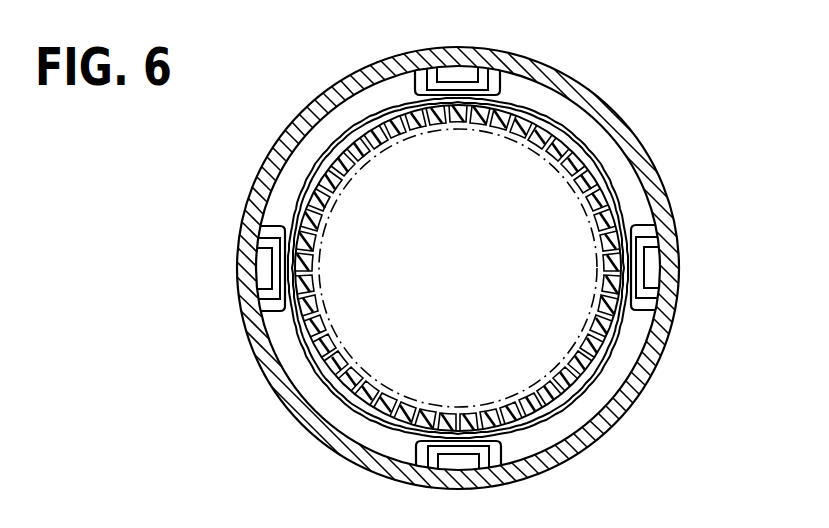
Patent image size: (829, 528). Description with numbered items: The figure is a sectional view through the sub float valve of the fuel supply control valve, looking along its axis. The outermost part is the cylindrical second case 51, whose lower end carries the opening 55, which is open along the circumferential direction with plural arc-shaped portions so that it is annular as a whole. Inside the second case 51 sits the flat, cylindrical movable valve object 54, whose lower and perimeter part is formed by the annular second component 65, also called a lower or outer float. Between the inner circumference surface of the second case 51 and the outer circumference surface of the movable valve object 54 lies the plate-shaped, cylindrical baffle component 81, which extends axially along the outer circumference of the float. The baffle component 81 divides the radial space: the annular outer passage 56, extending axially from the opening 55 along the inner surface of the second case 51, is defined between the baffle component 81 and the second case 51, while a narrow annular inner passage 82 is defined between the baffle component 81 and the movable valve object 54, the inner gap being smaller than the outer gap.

The second case 51 is at (605, 108).
The opening 55 is at (605, 143).
The outer passage 56 is at (458, 268).
The baffle component 81 is at (608, 173).
The inner passage 82 is at (608, 192).
The movable valve object 54 is at (613, 225).
The second component 65 is at (457, 268).